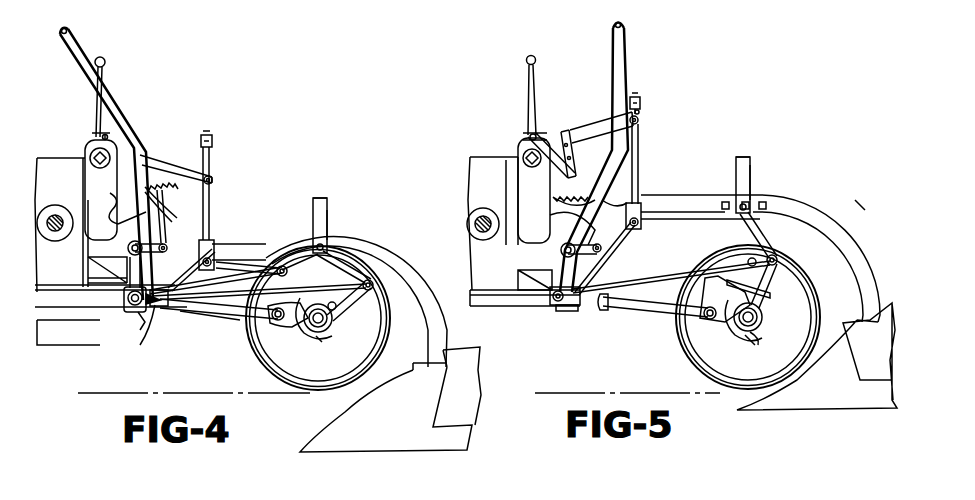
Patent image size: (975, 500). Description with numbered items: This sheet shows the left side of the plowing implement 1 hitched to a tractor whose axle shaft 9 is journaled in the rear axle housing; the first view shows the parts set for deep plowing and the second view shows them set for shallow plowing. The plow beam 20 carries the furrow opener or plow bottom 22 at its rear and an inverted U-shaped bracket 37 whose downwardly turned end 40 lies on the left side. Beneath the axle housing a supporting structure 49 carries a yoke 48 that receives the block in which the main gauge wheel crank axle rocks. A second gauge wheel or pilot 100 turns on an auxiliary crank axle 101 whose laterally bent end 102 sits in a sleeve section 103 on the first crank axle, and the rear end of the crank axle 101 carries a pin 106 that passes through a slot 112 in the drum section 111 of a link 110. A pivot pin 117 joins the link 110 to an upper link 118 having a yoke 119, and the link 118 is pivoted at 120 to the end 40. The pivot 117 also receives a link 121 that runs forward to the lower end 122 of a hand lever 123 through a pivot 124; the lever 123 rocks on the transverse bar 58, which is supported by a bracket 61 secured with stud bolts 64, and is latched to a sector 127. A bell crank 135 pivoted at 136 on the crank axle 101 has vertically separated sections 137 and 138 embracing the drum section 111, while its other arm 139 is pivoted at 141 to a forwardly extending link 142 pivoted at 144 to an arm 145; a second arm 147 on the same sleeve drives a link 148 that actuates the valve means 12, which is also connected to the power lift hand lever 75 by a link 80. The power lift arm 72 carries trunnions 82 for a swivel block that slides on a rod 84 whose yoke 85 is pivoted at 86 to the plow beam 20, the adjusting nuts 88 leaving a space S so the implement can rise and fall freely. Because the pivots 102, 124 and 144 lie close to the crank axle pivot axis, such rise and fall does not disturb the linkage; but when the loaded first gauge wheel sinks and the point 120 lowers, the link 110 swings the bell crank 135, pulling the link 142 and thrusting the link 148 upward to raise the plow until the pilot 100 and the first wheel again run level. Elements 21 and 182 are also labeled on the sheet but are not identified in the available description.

In FIG. 5, the plowing implement 1 is at (867, 200).
In FIG. 4, the axle shaft 9 is at (60, 245).
In FIG. 5, the axle shaft 9 is at (486, 208).
In FIG. 5, the valve actuating arm 12 is at (575, 168).
In FIG. 4, the plow beam 20 is at (262, 243).
In FIG. 4, the fender 21 is at (386, 249).
In FIG. 5, the fender 21 is at (810, 202).
In FIG. 4, the furrow opener 22 is at (417, 417).
In FIG. 5, the furrow opener 22 is at (840, 382).
In FIG. 4, the inverted U-shaped bracket 37 is at (327, 194).
In FIG. 5, the inverted U-shaped bracket 37 is at (747, 150).
In FIG. 4, the end of bracket 40 is at (327, 226).
In FIG. 5, the end of bracket 40 is at (751, 176).
In FIG. 4, the yoke 48 is at (128, 312).
In FIG. 5, the yoke 48 is at (562, 312).
In FIG. 4, the supporting structure 49 is at (85, 303).
In FIG. 5, the supporting structure 49 is at (515, 300).
In FIG. 4, the transverse bar 58 is at (130, 238).
In FIG. 5, the transverse bar 58 is at (565, 247).
In FIG. 4, the bracket 61 is at (112, 222).
In FIG. 5, the bracket 61 is at (545, 222).
In FIG. 4, the attaching stud bolts 64 is at (82, 215).
In FIG. 5, the attaching stud bolts 64 is at (503, 212).
In FIG. 4, the power lift arm 72 is at (176, 171).
In FIG. 5, the power lift arm 72 is at (597, 130).
In FIG. 4, the hand lever 75 is at (97, 112).
In FIG. 5, the hand lever 75 is at (535, 75).
In FIG. 5, the link 80 is at (557, 140).
In FIG. 4, the trunnions 82 is at (213, 179).
In FIG. 5, the trunnions 82 is at (641, 122).
In FIG. 4, the rod 84 is at (210, 200).
In FIG. 5, the rod 84 is at (640, 158).
In FIG. 5, the yoke 85 is at (646, 204).
In FIG. 4, the pivotal connection 86 is at (213, 258).
In FIG. 5, the pivotal connection 86 is at (643, 224).
In FIG. 4, the adjusting nuts 88 is at (206, 139).
In FIG. 5, the adjusting nuts 88 is at (641, 100).
In FIG. 5, the space S is at (652, 114).
In FIG. 4, the second gauge wheel 100 is at (383, 340).
In FIG. 5, the second gauge wheel 100 is at (805, 291).
In FIG. 4, the auxiliary crank axle 101 is at (236, 306).
In FIG. 5, the auxiliary crank axle 101 is at (655, 313).
In FIG. 4, the laterally bent end 102 is at (176, 306).
In FIG. 4, the sleeve section 103 is at (196, 314).
In FIG. 5, the sleeve section 103 is at (602, 311).
In FIG. 4, the pin 106 is at (324, 323).
In FIG. 5, the pin 106 is at (762, 320).
In FIG. 4, the link 110 is at (334, 318).
In FIG. 5, the link 110 is at (763, 291).
In FIG. 4, the drum section 111 is at (328, 318).
In FIG. 5, the drum section 111 is at (759, 316).
In FIG. 4, the slot 112 is at (320, 347).
In FIG. 5, the slot 112 is at (736, 351).
In FIG. 4, the pivot pin 117 is at (373, 283).
In FIG. 5, the pivot pin 117 is at (779, 259).
In FIG. 4, the upper link 118 is at (341, 262).
In FIG. 5, the upper link 118 is at (754, 228).
In FIG. 4, the yoke 119 is at (337, 306).
In FIG. 5, the yoke 119 is at (750, 258).
In FIG. 4, the pivot 120 is at (311, 229).
In FIG. 5, the pivot 120 is at (735, 200).
In FIG. 4, the link 121 is at (323, 289).
In FIG. 5, the link 121 is at (679, 276).
In FIG. 4, the lower end of hand lever 122 is at (144, 265).
In FIG. 4, the hand lever 123 is at (142, 142).
In FIG. 5, the hand lever 123 is at (625, 68).
In FIG. 4, the pivot 124 is at (153, 328).
In FIG. 4, the sector 127 is at (168, 208).
In FIG. 5, the sector 127 is at (625, 201).
In FIG. 4, the bell crank 135 is at (300, 336).
In FIG. 5, the bell crank 135 is at (718, 336).
In FIG. 4, the pivot 136 is at (277, 321).
In FIG. 5, the pivot 136 is at (705, 318).
In FIG. 5, the bifurcated section 137 is at (745, 300).
In FIG. 5, the bifurcated section 138 is at (758, 336).
In FIG. 4, the arm of bell crank 139 is at (268, 332).
In FIG. 5, the arm of bell crank 139 is at (706, 270).
In FIG. 4, the pivot 141 is at (282, 265).
In FIG. 4, the link 142 is at (218, 266).
In FIG. 4, the pivot 144 is at (138, 322).
In FIG. 4, the arm 145 is at (88, 279).
In FIG. 4, the second arm 147 is at (166, 250).
In FIG. 4, the link 148 is at (163, 224).
In FIG. 5, the link 148 is at (610, 253).
In FIG. 5, the bar 182 is at (518, 282).